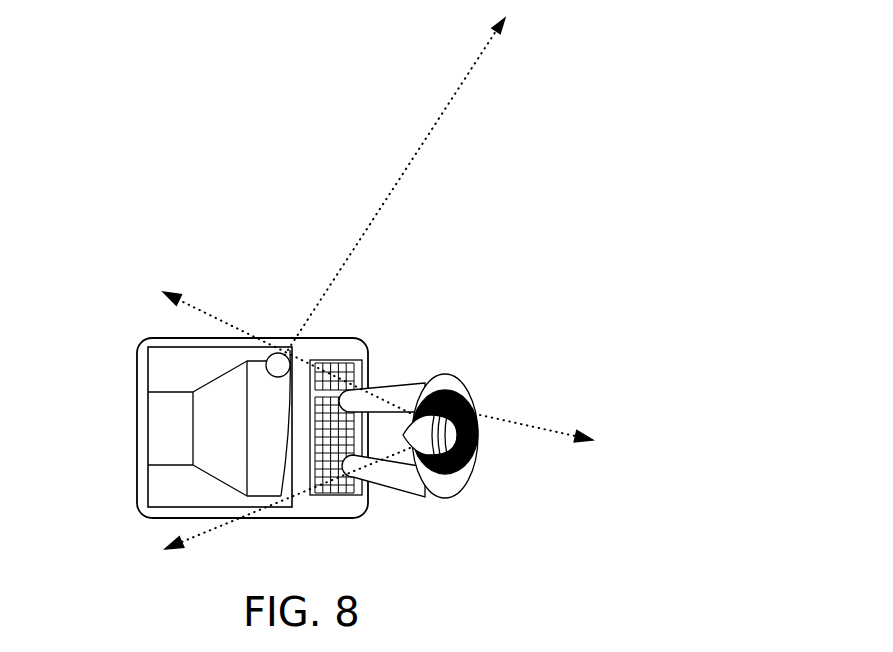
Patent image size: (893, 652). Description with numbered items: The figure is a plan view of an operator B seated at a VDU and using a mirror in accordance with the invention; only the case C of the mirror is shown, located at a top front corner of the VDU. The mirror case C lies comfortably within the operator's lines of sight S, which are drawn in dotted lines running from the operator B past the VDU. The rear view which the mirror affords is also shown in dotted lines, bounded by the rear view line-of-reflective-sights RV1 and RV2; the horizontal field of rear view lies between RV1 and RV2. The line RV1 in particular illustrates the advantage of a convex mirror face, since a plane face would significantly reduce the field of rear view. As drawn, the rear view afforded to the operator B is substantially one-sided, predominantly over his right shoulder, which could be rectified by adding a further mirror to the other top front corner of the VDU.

The element VDU is at (158, 450).
The case C is at (283, 353).
The operator B is at (466, 381).
The lines of sight S is at (230, 522).
The rear view line-of-reflective-sight RV1 is at (462, 88).
The rear view line-of-reflective-sight RV2 is at (581, 447).